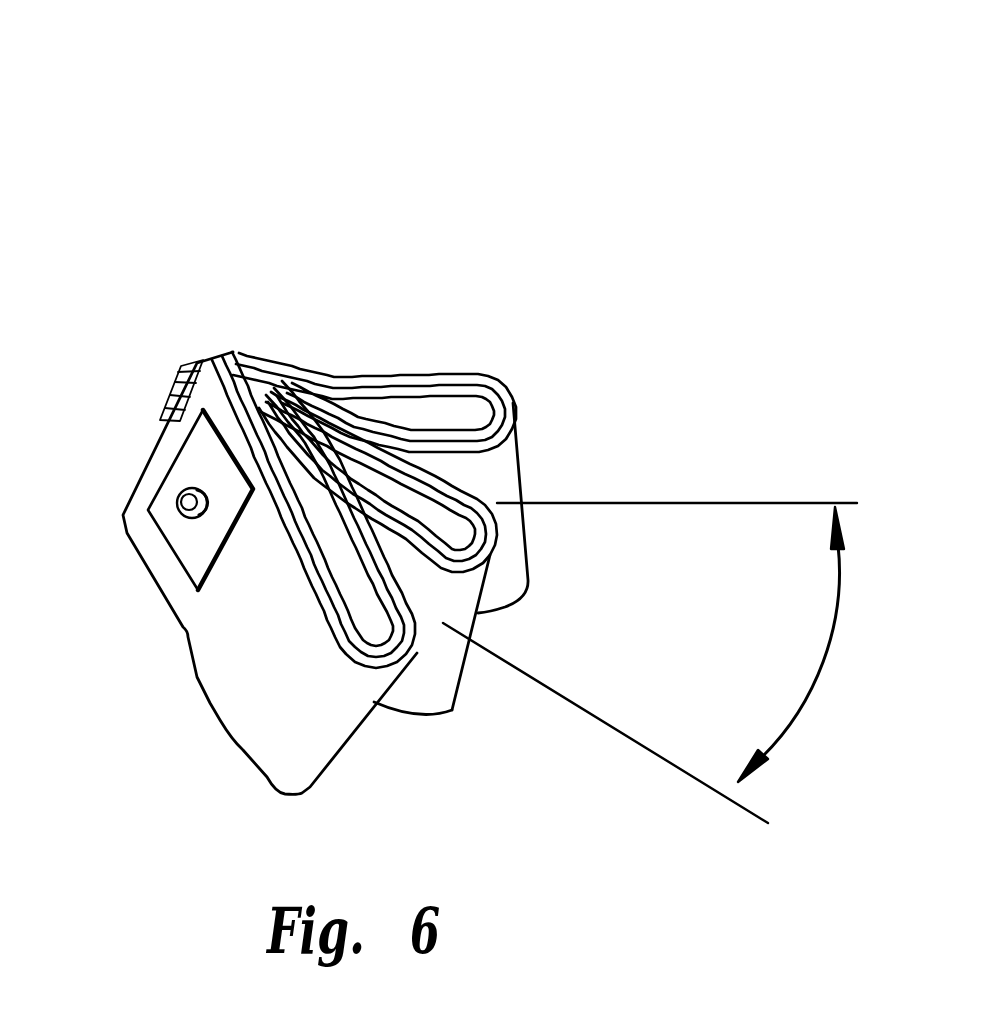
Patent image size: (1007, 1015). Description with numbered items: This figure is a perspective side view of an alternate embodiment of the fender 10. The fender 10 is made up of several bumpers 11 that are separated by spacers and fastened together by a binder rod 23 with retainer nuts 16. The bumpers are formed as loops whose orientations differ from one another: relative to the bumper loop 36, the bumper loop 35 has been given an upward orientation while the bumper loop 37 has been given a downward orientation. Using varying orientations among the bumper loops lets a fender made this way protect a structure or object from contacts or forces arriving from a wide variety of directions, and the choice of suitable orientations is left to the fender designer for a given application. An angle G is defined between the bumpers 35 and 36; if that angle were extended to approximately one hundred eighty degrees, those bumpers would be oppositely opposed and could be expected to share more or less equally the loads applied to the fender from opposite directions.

The fender 10 is at (362, 200).
The bumpers 11 is at (527, 542).
The retainer nuts 16 is at (190, 488).
The binder rod 23 is at (179, 508).
The bumper loop 35 is at (518, 456).
The bumper loop 36 is at (466, 662).
The bumper loop 37 is at (330, 760).
The angle G is at (651, 663).